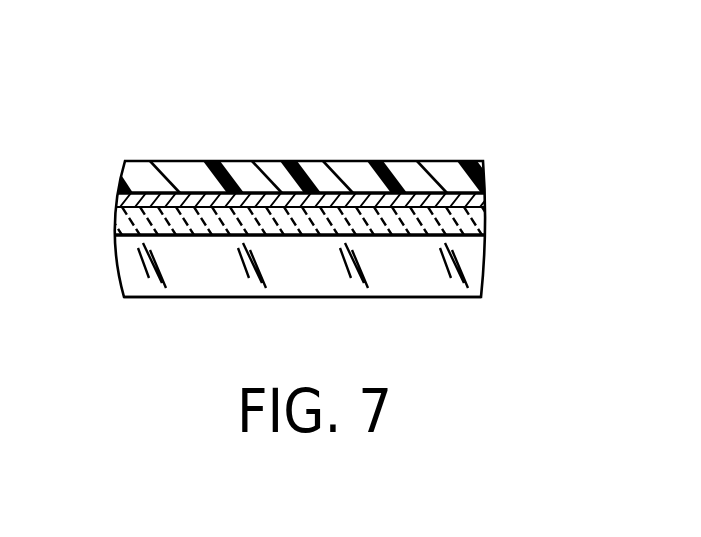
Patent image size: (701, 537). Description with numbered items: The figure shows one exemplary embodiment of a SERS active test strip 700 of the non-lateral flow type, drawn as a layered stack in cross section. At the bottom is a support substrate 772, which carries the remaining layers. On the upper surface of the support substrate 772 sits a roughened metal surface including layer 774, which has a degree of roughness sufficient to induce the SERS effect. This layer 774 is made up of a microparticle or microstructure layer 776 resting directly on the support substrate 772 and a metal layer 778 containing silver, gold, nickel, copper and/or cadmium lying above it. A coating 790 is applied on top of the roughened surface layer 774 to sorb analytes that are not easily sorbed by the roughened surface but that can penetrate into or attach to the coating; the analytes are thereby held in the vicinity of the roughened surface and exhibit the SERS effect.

The SERS active test strip 700 is at (362, 107).
The coating 790 is at (483, 181).
The metal layer 778 is at (483, 199).
The microparticle or microstructure layer 776 is at (483, 223).
The roughened metal surface layer 774 is at (103, 192).
The support substrate 772 is at (485, 265).